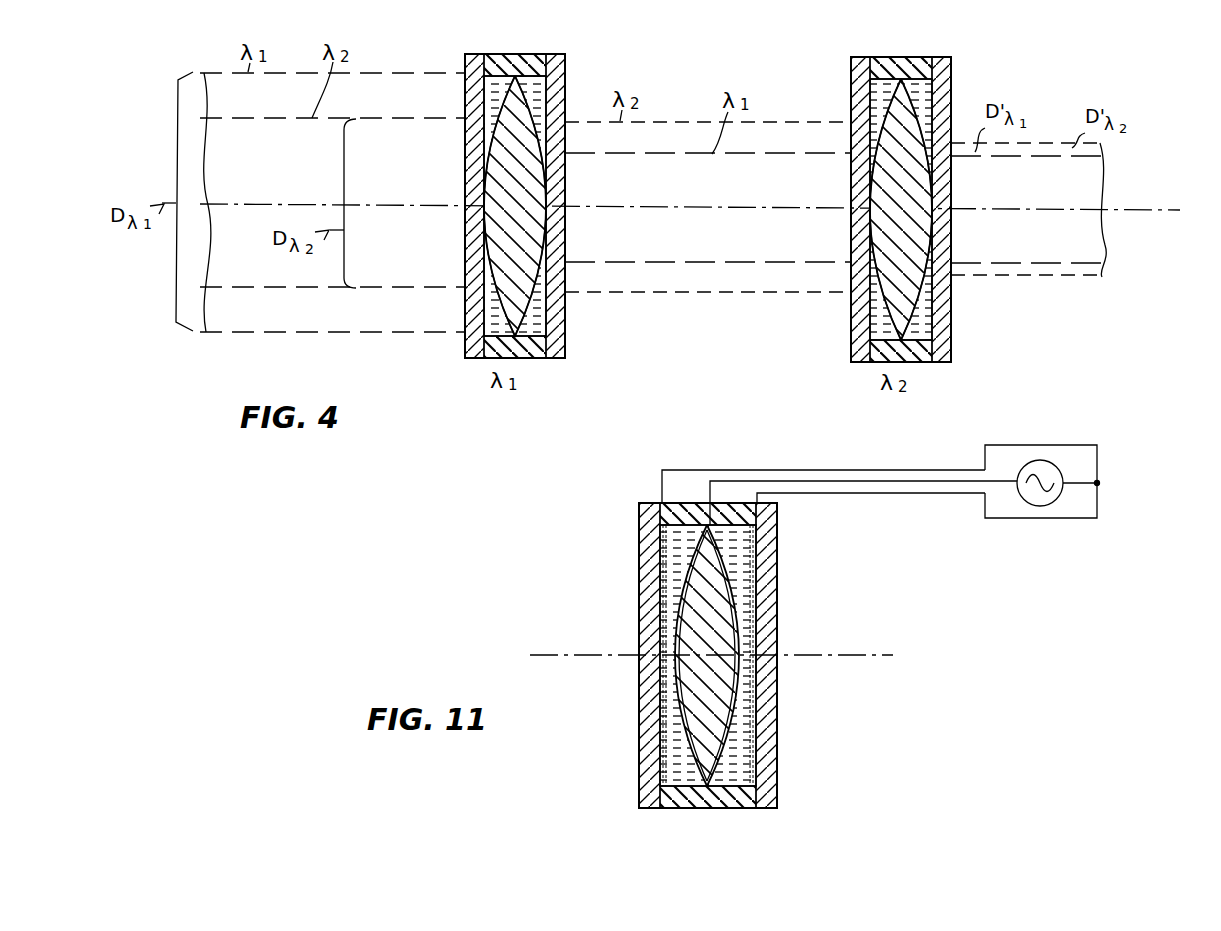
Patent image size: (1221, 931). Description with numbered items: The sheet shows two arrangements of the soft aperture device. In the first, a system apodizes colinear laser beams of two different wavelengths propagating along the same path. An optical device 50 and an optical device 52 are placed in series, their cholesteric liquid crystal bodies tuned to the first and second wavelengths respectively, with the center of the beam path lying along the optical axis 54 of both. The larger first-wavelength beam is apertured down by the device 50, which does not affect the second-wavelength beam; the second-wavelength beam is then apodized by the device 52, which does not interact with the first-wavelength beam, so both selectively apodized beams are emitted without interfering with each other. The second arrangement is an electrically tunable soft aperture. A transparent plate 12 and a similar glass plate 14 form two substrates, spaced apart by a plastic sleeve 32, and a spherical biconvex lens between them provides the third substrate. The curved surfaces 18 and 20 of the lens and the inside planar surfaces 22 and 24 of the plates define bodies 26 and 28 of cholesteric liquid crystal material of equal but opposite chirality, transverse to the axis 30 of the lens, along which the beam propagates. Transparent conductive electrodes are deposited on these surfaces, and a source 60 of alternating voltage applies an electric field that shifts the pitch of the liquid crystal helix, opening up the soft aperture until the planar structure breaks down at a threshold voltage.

In FIG. 11, the plate 12 is at (640, 530).
In FIG. 11, the glass plate 14 is at (772, 521).
In FIG. 11, the curved surface 18 is at (680, 612).
In FIG. 11, the curved surface 20 is at (752, 611).
In FIG. 11, the inside planar surface 22 is at (664, 758).
In FIG. 11, the inside planar surface 24 is at (755, 745).
In FIG. 11, the body of cholesteric liquid crystal material 26 is at (664, 570).
In FIG. 11, the body of cholesteric liquid crystal material 28 is at (753, 548).
In FIG. 11, the axis 30 is at (838, 656).
In FIG. 11, the plastic sleeve 32 is at (661, 504).
In FIG. 4, the optical device 50 is at (503, 56).
In FIG. 4, the optical device 52 is at (892, 58).
In FIG. 4, the optical axis 54 is at (1143, 211).
In FIG. 11, the source 60 is at (1046, 462).